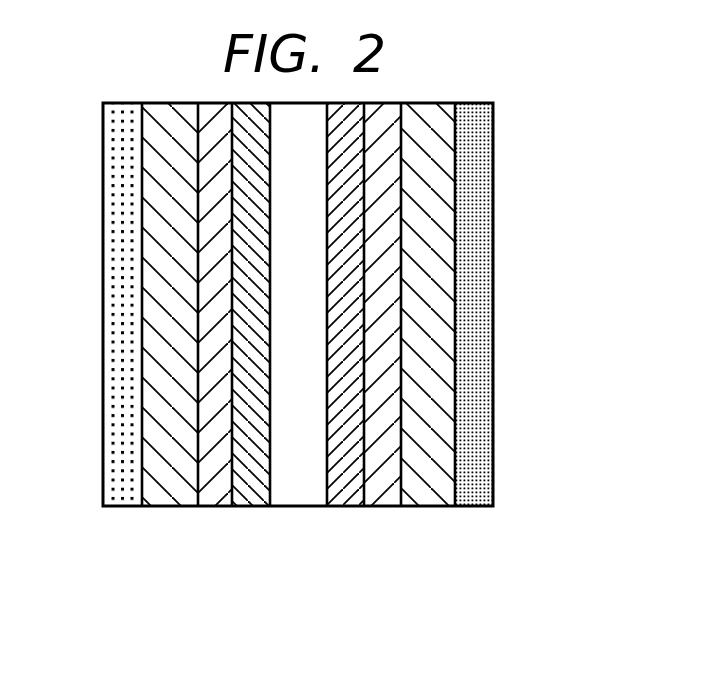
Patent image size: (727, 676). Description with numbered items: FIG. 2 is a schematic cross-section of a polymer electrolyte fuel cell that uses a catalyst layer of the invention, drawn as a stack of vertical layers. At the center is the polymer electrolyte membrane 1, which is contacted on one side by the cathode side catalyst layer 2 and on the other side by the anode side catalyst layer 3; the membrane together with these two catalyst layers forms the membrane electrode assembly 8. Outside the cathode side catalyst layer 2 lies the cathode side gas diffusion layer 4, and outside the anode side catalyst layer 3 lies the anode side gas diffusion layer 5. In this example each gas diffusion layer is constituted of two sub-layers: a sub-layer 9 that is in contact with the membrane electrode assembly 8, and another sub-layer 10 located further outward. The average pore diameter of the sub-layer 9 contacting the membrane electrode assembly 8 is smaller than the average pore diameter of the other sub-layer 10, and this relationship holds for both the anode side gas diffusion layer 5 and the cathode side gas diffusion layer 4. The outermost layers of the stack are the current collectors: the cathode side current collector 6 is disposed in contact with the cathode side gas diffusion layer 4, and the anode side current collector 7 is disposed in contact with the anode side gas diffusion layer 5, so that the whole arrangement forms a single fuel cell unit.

The polymer electrolyte membrane 1 is at (298, 500).
The cathode side catalyst layer 2 is at (348, 500).
The anode side catalyst layer 3 is at (251, 500).
The cathode side gas diffusion layer 4 is at (372, 590).
The anode side gas diffusion layer 5 is at (150, 590).
The cathode side current collector 6 is at (475, 500).
The anode side current collector 7 is at (120, 498).
The membrane electrode assembly 8 is at (352, 590).
The sub-layer 9 is at (213, 500).
The other sub-layer 10 is at (168, 500).